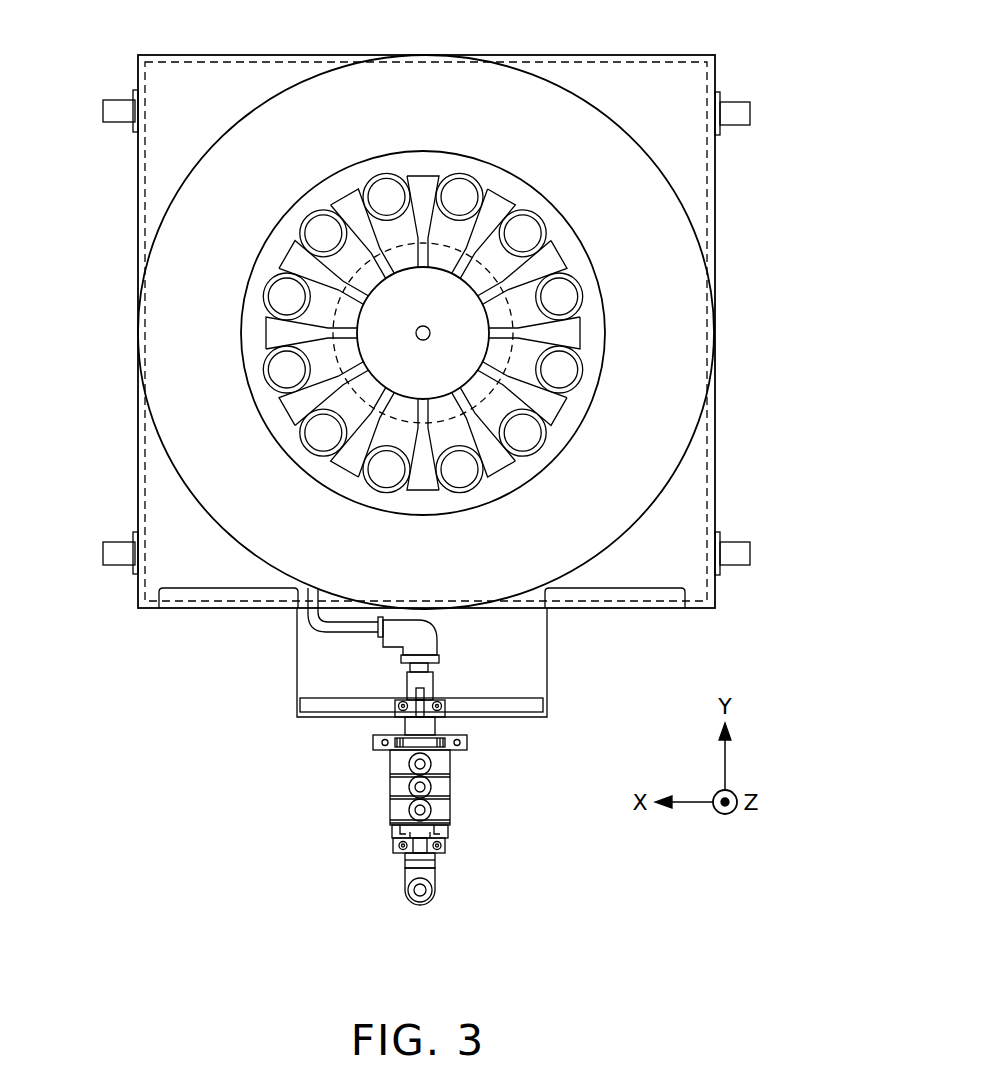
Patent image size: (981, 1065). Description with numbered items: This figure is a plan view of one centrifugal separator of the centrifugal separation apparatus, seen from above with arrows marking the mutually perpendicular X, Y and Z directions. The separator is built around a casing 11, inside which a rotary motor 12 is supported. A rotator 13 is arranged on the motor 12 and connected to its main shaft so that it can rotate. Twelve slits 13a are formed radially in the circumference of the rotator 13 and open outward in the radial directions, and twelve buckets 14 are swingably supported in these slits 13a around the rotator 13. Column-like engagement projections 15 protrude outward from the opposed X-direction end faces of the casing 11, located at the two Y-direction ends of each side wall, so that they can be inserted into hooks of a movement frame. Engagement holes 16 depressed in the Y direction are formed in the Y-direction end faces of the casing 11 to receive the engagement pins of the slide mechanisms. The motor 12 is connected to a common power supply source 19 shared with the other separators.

The casing 11 is at (720, 170).
The rotary motor 12 is at (487, 262).
The rotator 13 is at (442, 354).
The slits 13a is at (465, 432).
The buckets 14 is at (588, 360).
The engagement projections 15 is at (103, 112).
The engagement holes 16 is at (213, 60).
The power supply source 19 is at (452, 803).